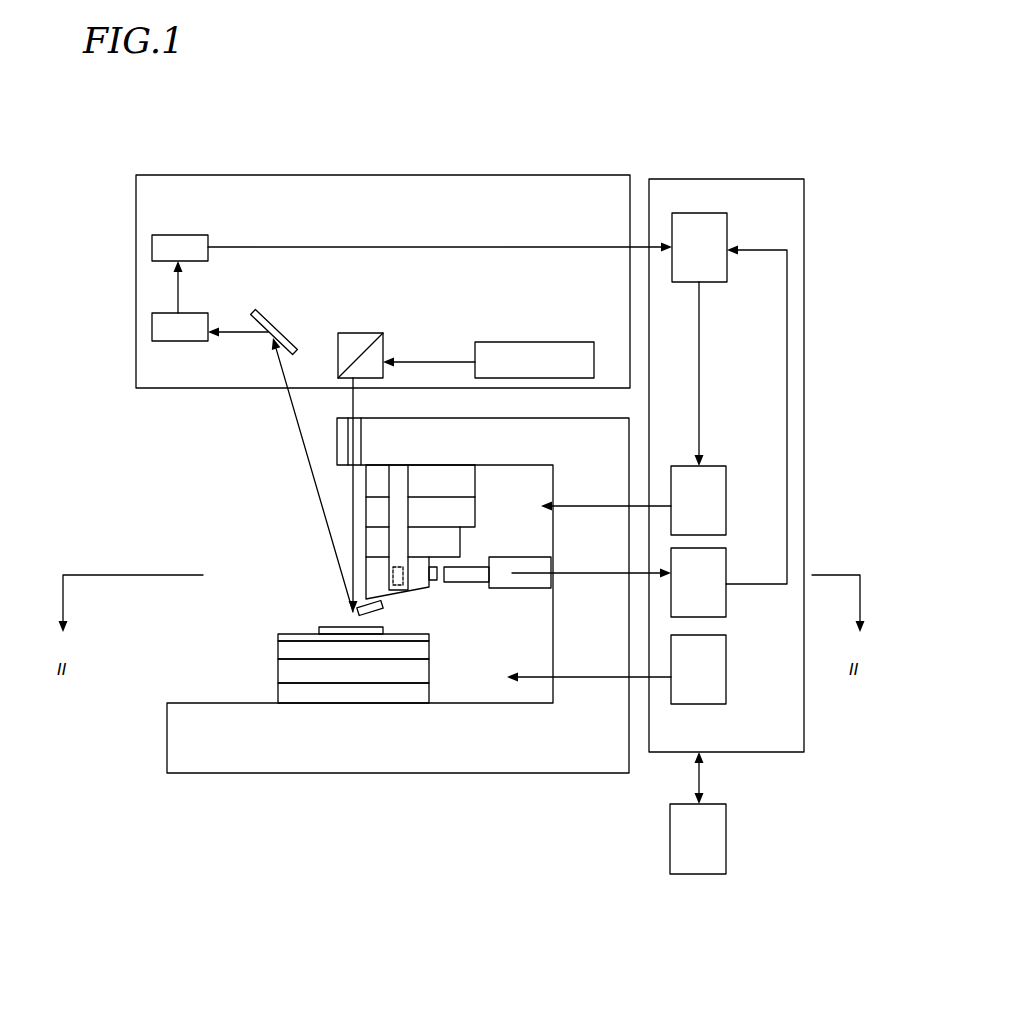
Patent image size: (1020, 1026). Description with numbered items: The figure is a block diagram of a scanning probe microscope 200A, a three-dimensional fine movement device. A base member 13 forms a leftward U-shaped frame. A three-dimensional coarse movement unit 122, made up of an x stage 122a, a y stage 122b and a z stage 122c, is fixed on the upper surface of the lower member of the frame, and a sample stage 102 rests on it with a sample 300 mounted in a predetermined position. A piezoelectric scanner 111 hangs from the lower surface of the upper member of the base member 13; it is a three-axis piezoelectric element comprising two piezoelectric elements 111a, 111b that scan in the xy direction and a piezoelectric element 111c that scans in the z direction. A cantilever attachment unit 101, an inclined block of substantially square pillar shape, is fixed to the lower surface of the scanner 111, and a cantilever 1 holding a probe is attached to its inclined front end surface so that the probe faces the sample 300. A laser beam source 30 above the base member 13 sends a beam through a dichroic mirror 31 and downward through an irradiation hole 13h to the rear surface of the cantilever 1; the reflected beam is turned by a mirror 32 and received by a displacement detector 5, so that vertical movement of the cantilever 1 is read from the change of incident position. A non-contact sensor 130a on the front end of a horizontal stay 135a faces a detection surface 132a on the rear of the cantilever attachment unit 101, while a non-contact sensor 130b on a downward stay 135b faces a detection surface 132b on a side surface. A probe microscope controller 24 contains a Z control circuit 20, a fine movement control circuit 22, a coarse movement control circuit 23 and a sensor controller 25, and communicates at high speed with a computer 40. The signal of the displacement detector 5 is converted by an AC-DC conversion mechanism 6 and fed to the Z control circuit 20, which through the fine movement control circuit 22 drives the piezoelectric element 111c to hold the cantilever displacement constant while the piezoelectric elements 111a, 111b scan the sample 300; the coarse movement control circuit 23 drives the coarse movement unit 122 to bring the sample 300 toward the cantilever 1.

The scanning probe microscope 200A is at (688, 134).
The cantilever 1 is at (383, 610).
The displacement detector 5 is at (208, 317).
The AC-DC conversion mechanism 6 is at (208, 240).
The base member 13 is at (477, 774).
The irradiation hole 13h is at (347, 418).
The Z control circuit 20 is at (727, 222).
The fine movement control circuit 22 is at (715, 463).
The coarse movement control circuit 23 is at (727, 652).
The probe microscope controller 24 is at (758, 178).
The sensor controller 25 is at (727, 562).
The laser beam source 30 is at (513, 340).
The dichroic mirror 31 is at (382, 343).
The mirror 32 is at (287, 332).
The control unit (computer) 40 is at (727, 823).
The cantilever attachment unit 101 is at (377, 582).
The sample stage 102 is at (278, 633).
The piezoelectric scanner 111 is at (314, 515).
The piezoelectric element 111a is at (373, 487).
The piezoelectric element 111b is at (373, 513).
The piezoelectric element 111c is at (373, 539).
The three-dimensional coarse movement unit 122 is at (343, 672).
The x stage 122a is at (278, 652).
The y stage 122b is at (279, 673).
The z stage 122c is at (281, 697).
The non-contact sensor 130a is at (467, 582).
The non-contact sensor 130b is at (382, 569).
The detection surface 132a is at (433, 581).
The detection surface 132b is at (268, 548).
The stay 135a is at (513, 588).
The stay 135b is at (395, 555).
The sample 300 is at (319, 628).